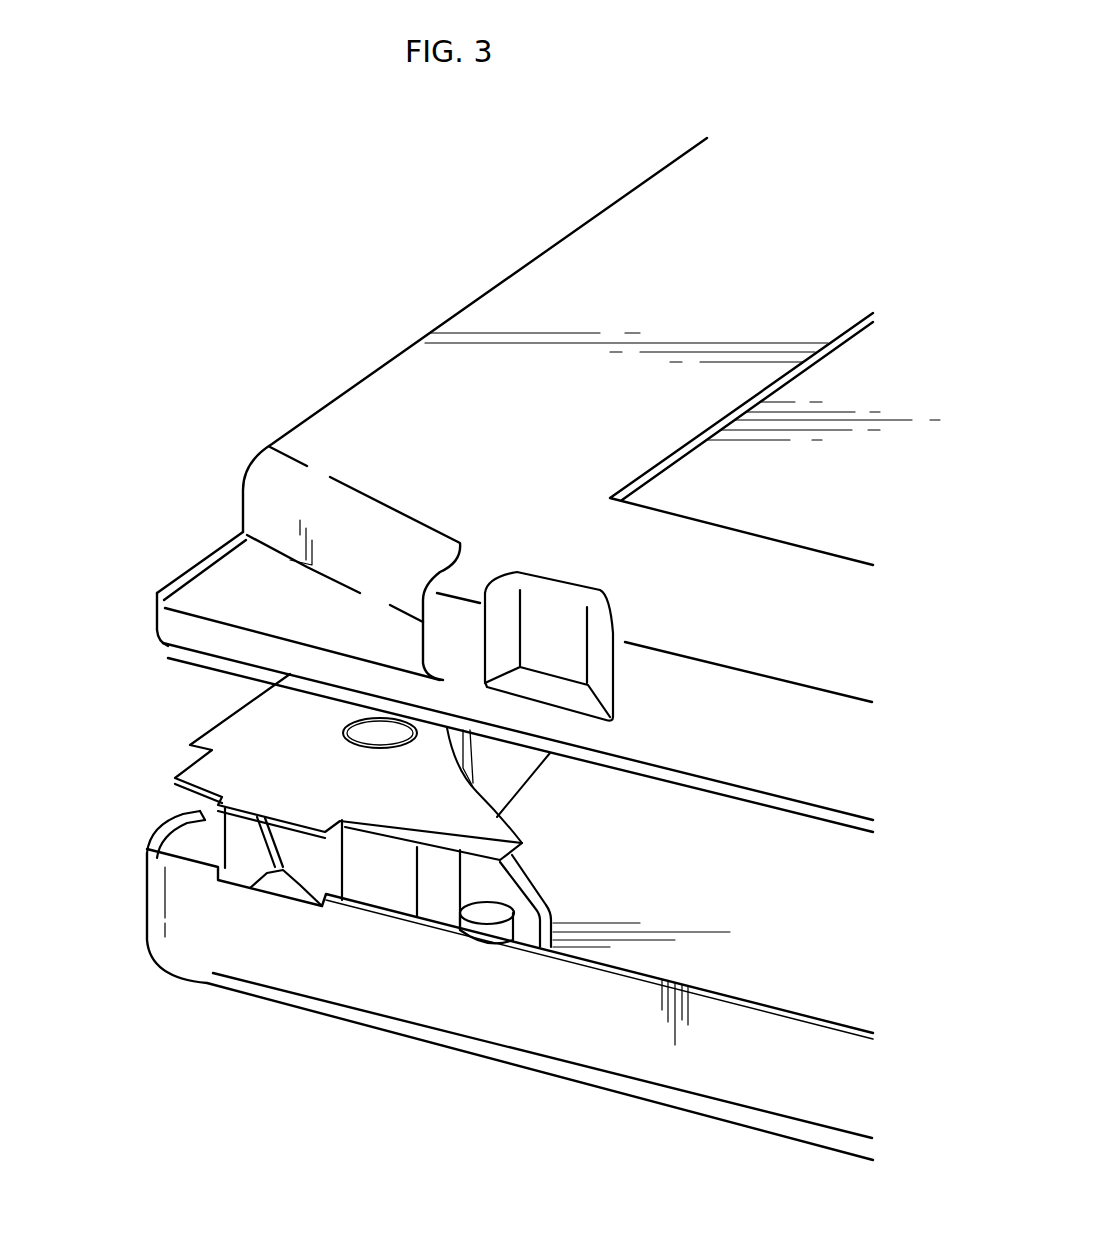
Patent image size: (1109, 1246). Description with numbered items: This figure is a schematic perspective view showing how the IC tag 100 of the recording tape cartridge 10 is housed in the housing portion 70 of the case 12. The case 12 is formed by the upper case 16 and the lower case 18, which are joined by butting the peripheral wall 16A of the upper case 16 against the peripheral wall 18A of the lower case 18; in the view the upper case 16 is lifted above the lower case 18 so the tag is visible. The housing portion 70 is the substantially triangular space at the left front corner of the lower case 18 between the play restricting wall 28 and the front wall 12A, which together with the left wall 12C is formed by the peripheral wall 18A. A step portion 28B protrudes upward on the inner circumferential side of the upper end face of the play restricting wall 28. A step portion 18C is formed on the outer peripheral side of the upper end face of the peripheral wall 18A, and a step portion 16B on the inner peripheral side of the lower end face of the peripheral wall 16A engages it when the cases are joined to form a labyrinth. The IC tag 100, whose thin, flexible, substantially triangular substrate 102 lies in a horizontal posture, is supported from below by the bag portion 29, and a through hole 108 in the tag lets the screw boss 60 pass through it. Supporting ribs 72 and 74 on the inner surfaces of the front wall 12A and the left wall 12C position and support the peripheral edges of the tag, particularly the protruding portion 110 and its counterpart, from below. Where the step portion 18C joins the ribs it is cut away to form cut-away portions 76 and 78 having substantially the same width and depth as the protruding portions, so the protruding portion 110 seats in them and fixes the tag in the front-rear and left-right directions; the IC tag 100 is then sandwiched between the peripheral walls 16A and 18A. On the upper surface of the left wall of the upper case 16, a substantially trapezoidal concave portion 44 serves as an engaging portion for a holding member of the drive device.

The recording tape cartridge 10 is at (250, 318).
The case 12 is at (139, 876).
The front wall 12A is at (195, 813).
The left wall 12C is at (838, 780).
The upper case 16 is at (483, 271).
The peripheral wall 16A is at (757, 753).
The step portion 16B is at (670, 777).
The lower case 18 is at (503, 1070).
The peripheral wall 18A is at (640, 1047).
The step portion 18C is at (185, 813).
The play restricting wall 28 is at (548, 905).
The step portion 28B is at (530, 883).
The bag portion 29 is at (496, 932).
The concave portion 44 is at (555, 612).
The screw boss 60 is at (387, 890).
The housing portion 70 is at (211, 856).
The supporting rib 72 is at (247, 862).
The supporting rib 74 is at (290, 873).
The cut-away portion 76 is at (174, 778).
The cut-away portion 78 is at (225, 876).
The IC tag 100 is at (267, 709).
The substrate 102 is at (462, 812).
The through hole 108 is at (345, 728).
The protruding portion 110 is at (223, 726).